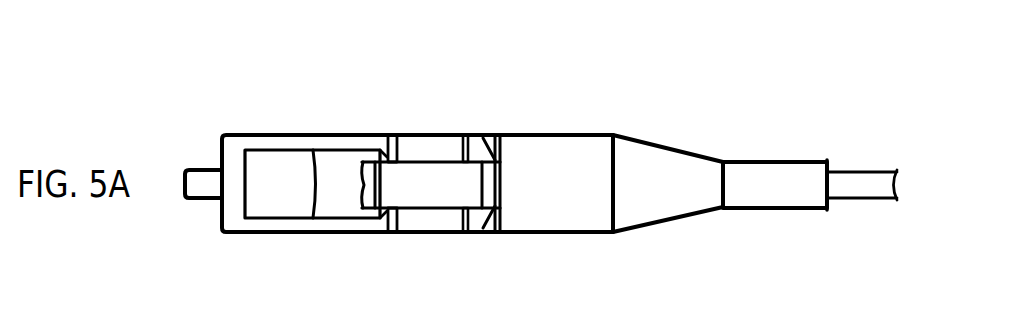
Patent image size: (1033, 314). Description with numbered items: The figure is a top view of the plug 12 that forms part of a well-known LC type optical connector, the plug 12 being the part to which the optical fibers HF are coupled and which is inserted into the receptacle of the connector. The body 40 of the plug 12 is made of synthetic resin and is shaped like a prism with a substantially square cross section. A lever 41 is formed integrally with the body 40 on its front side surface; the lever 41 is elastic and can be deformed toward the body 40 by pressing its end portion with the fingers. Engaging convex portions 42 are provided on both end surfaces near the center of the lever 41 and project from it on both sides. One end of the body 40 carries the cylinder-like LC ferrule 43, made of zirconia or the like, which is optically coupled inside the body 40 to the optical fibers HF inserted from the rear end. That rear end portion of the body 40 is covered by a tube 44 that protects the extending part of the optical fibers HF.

The plug 12 is at (482, 45).
The body 40 is at (280, 133).
The lever 41 is at (432, 182).
The engaging convex portions 42 is at (385, 150).
The LC ferrule 43 is at (200, 177).
The tube 44 is at (652, 156).
The optical fibers HF is at (858, 180).